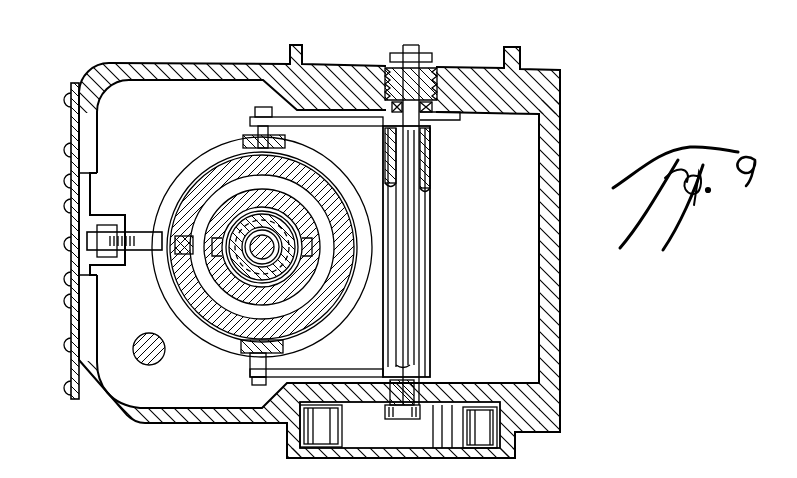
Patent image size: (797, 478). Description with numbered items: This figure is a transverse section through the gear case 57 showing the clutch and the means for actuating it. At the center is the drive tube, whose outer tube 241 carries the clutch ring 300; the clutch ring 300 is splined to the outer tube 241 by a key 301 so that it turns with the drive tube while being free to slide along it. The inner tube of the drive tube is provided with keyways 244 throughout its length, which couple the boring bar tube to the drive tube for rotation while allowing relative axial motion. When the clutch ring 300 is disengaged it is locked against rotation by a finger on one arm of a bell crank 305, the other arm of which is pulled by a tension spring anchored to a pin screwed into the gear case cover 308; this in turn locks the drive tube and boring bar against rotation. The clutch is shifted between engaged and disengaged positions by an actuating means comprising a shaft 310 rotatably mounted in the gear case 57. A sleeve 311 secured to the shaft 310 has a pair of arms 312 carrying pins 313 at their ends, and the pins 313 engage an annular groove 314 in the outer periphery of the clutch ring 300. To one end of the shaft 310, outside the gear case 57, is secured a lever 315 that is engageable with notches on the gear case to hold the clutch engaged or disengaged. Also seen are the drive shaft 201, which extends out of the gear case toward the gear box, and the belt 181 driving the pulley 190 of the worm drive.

The gear case 57 is at (131, 421).
The gear case cover 308 is at (73, 150).
The drive shaft 201 is at (135, 343).
The clutch ring 300 is at (196, 162).
The outer tube 241 is at (230, 198).
The annular groove 314 is at (196, 322).
The keyways 244 is at (190, 276).
The key 301 is at (178, 236).
The bell crank 305 is at (139, 252).
The arms 312 is at (372, 128).
The pins 313 is at (251, 115).
The sleeve 311 is at (410, 296).
The shaft 310 is at (430, 118).
The lever 315 is at (403, 47).
The pulley 190 is at (392, 447).
The belt 181 is at (305, 445).